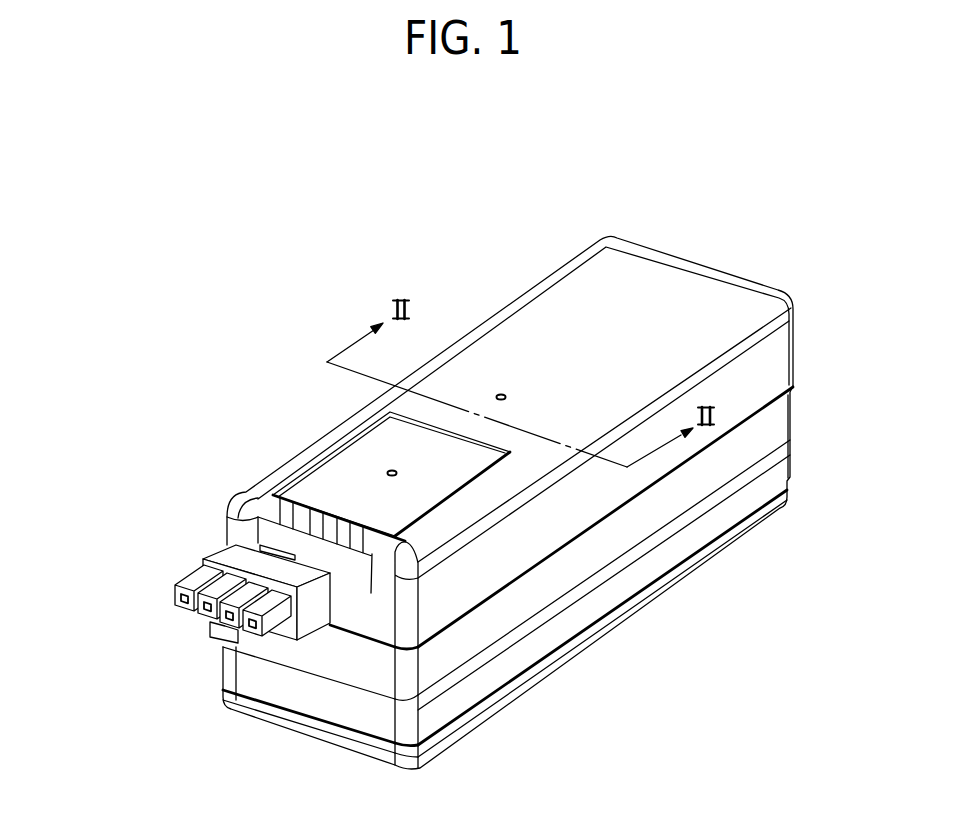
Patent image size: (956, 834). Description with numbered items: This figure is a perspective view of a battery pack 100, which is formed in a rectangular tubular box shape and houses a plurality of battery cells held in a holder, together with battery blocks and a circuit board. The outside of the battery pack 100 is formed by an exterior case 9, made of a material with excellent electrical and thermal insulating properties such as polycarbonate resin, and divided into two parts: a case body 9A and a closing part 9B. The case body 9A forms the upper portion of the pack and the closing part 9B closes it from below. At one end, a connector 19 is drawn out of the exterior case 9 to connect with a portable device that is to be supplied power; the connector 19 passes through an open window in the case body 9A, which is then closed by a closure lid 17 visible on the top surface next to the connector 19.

The battery pack 100 is at (302, 233).
The exterior case 9 is at (692, 747).
The case body 9A is at (645, 523).
The closing part 9B is at (565, 657).
The closure lid 17 is at (343, 477).
The connector 19 is at (163, 533).